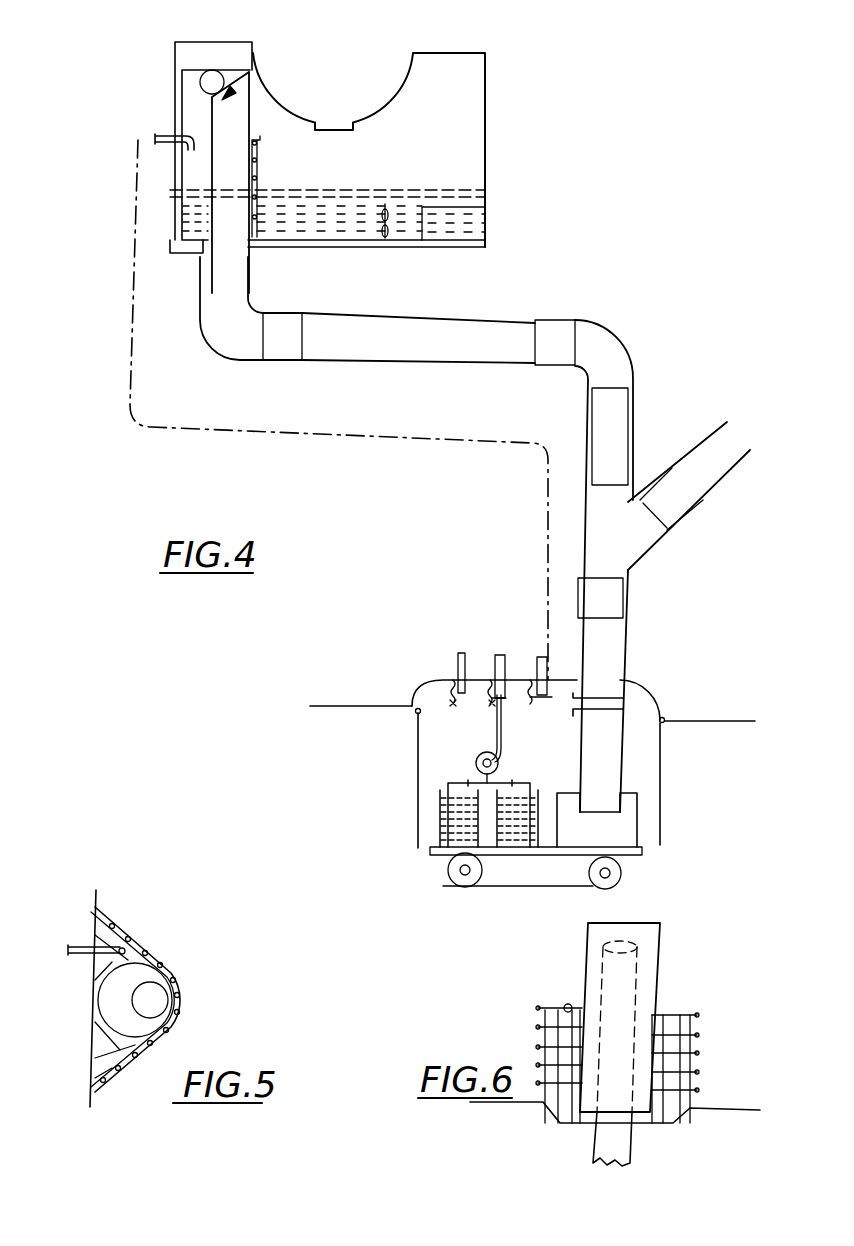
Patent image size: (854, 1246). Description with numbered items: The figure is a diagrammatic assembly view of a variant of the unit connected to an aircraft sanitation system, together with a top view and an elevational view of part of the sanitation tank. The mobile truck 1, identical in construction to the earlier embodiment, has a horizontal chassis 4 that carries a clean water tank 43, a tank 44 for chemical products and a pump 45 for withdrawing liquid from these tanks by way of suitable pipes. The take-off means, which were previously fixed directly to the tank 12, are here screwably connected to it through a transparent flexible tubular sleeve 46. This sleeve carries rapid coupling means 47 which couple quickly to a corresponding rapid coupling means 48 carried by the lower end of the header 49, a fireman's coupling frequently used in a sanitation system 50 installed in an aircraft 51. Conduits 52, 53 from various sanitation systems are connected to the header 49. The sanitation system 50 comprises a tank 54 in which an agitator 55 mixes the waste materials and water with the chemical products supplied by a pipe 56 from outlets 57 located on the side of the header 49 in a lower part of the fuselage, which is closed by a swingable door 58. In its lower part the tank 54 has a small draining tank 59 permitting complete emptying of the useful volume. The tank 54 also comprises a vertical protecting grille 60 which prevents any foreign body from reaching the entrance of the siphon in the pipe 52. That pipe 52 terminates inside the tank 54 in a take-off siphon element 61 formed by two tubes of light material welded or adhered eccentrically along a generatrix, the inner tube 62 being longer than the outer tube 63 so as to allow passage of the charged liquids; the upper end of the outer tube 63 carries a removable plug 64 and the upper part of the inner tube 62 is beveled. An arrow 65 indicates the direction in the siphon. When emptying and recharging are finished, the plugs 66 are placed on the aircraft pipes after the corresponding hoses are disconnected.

In FIG. 4, the truck 1 is at (434, 871).
In FIG. 4, the chassis 4 is at (643, 857).
In FIG. 4, the tank 12 is at (597, 820).
In FIG. 4, the clean water tank 43 is at (438, 815).
In FIG. 4, the tank for chemical products 44 is at (505, 842).
In FIG. 4, the pump 45 is at (507, 727).
In FIG. 4, the transparent flexible tubular sleeve 46 is at (618, 768).
In FIG. 4, the rapid coupling means 47 is at (624, 722).
In FIG. 4, the rapid coupling means 48 is at (625, 686).
In FIG. 4, the header 49 is at (613, 603).
In FIG. 4, the sanitation system 50 is at (492, 121).
In FIG. 4, the aircraft 51 is at (340, 705).
In FIG. 4, the conduit 52 is at (473, 336).
In FIG. 4, the conduit 53 is at (698, 460).
In FIG. 4, the tank 54 is at (353, 243).
In FIG. 4, the agitator 55 is at (384, 210).
In FIG. 4, the pipe 56 is at (273, 430).
In FIG. 4, the outlets 57 is at (540, 657).
In FIG. 4, the swingable door 58 is at (662, 805).
In FIG. 4, the draining tank 59 is at (176, 252).
In FIG. 4, the vertical protecting grille 60 is at (263, 183).
In FIG. 5, the vertical protecting grille 60 is at (137, 943).
In FIG. 6, the vertical protecting grille 60 is at (543, 1013).
In FIG. 4, the take-off siphon element 61 is at (252, 117).
In FIG. 6, the take-off siphon element 61 is at (627, 1007).
In FIG. 4, the inner tube 62 is at (190, 152).
In FIG. 5, the inner tube 62 is at (163, 1002).
In FIG. 4, the outer tube 63 is at (175, 100).
In FIG. 5, the outer tube 63 is at (113, 1015).
In FIG. 6, the outer tube 63 is at (652, 942).
In FIG. 4, the removable plug 64 is at (199, 78).
In FIG. 4, the direction arrow 65 is at (226, 96).
In FIG. 4, the plugs 66 is at (545, 699).